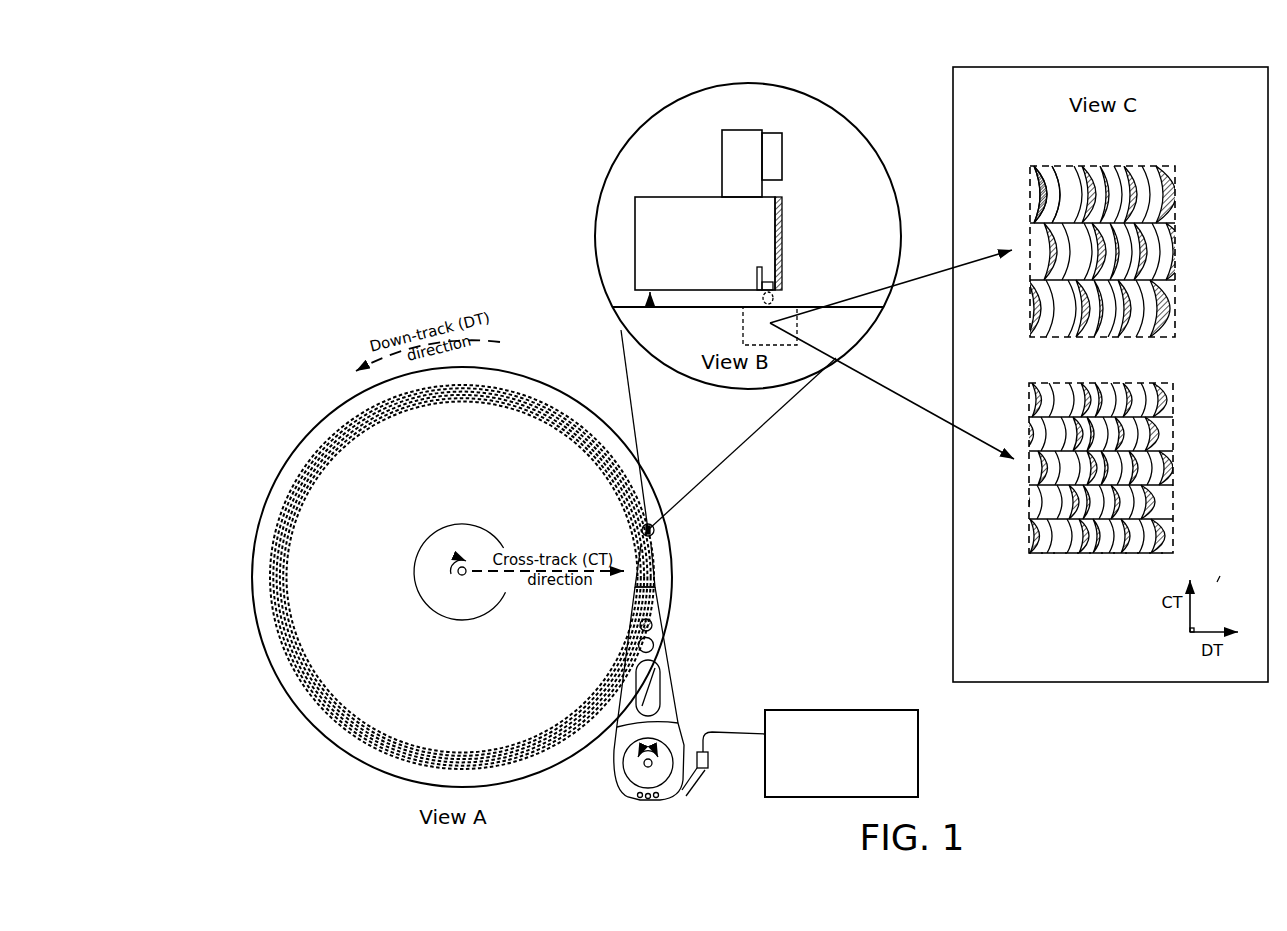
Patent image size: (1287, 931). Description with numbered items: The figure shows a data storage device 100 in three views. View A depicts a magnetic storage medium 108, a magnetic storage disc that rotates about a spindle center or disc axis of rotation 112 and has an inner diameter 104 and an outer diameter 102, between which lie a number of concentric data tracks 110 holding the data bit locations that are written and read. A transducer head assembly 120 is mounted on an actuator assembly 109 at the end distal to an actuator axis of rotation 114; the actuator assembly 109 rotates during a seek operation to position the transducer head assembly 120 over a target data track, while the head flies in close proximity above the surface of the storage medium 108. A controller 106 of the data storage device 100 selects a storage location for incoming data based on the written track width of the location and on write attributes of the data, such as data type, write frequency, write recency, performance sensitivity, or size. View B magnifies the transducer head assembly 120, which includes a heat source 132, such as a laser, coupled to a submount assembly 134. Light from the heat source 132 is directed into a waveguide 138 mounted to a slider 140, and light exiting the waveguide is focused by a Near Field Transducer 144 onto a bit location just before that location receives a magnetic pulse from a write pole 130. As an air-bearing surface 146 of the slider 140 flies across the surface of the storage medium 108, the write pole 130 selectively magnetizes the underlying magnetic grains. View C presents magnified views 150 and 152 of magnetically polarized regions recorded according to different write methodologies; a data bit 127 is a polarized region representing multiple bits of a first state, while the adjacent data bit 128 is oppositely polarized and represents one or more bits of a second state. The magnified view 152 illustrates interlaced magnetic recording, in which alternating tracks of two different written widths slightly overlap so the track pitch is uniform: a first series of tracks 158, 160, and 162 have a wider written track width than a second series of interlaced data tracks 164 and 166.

The data storage device 100 is at (368, 166).
The outer diameter 102 is at (318, 420).
The inner diameter 104 is at (415, 583).
The controller 106 is at (810, 753).
The magnetic storage medium 108 is at (335, 746).
The actuator assembly 109 is at (668, 655).
The concentric data tracks 110 is at (300, 679).
The disc axis of rotation 112 is at (456, 567).
The actuator axis of rotation 114 is at (643, 765).
The transducer head assembly 120 is at (660, 535).
The data bit 127 is at (1040, 178).
The data bit 128 is at (1060, 168).
The write pole 130 is at (762, 287).
The heat source 132 is at (776, 132).
The submount assembly 134 is at (728, 172).
The waveguide 138 is at (782, 225).
The slider 140 is at (700, 197).
The Near Field Transducer 144 is at (758, 267).
The air-bearing surface 146 is at (650, 308).
The magnified view 150 is at (1030, 206).
The magnified view 152 is at (1118, 383).
The track 158 is at (1180, 397).
The track 160 is at (1180, 466).
The track 162 is at (1180, 535).
The interlaced data track 164 is at (1180, 431).
The interlaced data track 166 is at (1180, 500).